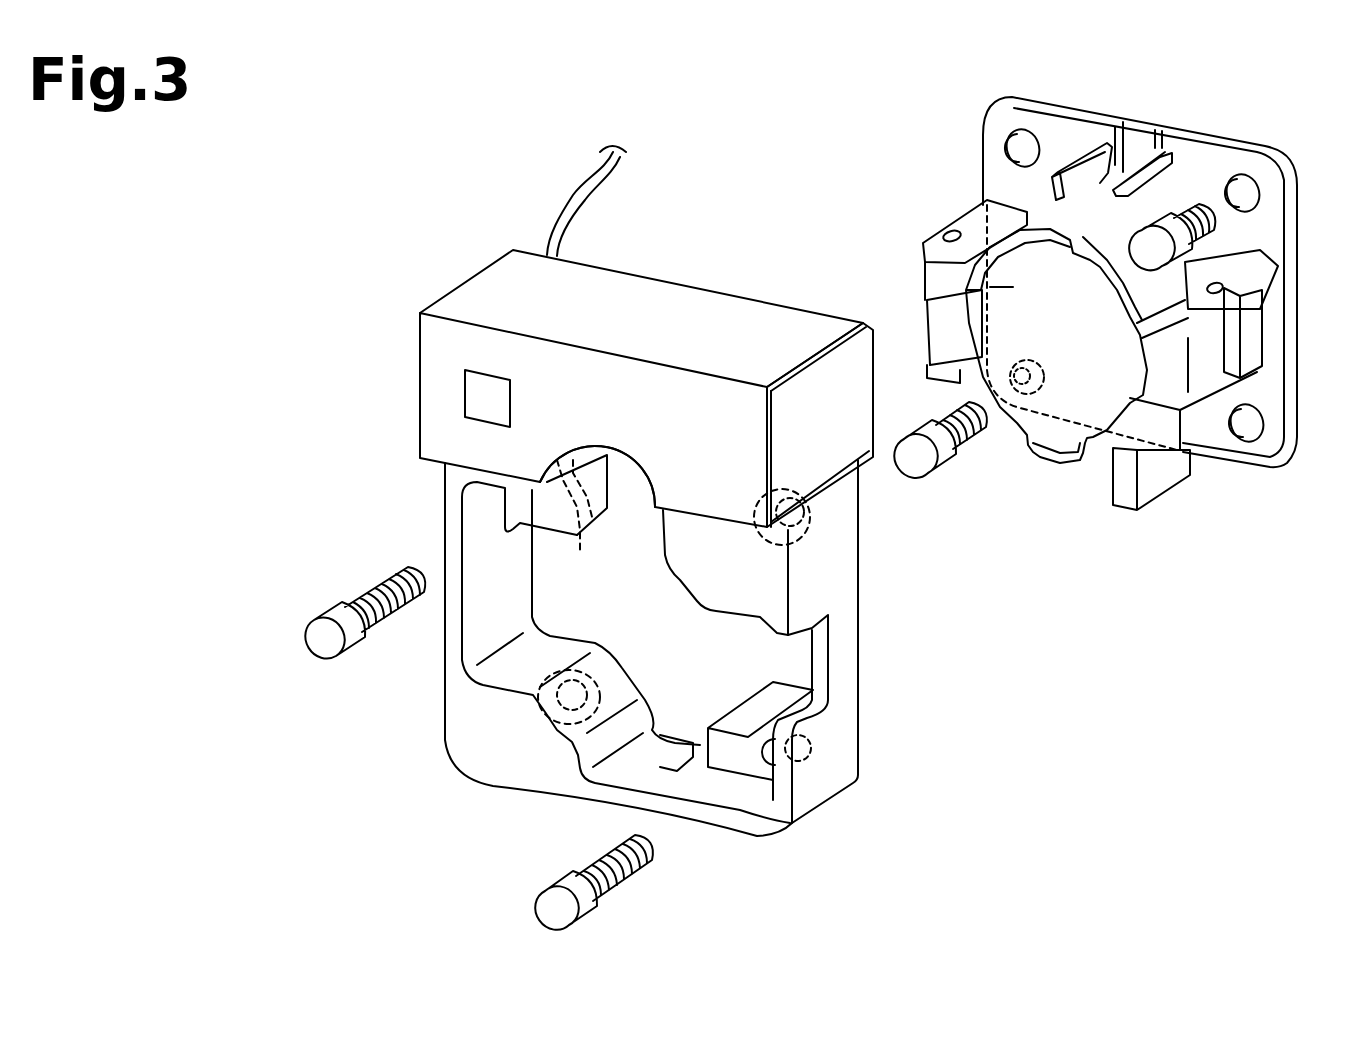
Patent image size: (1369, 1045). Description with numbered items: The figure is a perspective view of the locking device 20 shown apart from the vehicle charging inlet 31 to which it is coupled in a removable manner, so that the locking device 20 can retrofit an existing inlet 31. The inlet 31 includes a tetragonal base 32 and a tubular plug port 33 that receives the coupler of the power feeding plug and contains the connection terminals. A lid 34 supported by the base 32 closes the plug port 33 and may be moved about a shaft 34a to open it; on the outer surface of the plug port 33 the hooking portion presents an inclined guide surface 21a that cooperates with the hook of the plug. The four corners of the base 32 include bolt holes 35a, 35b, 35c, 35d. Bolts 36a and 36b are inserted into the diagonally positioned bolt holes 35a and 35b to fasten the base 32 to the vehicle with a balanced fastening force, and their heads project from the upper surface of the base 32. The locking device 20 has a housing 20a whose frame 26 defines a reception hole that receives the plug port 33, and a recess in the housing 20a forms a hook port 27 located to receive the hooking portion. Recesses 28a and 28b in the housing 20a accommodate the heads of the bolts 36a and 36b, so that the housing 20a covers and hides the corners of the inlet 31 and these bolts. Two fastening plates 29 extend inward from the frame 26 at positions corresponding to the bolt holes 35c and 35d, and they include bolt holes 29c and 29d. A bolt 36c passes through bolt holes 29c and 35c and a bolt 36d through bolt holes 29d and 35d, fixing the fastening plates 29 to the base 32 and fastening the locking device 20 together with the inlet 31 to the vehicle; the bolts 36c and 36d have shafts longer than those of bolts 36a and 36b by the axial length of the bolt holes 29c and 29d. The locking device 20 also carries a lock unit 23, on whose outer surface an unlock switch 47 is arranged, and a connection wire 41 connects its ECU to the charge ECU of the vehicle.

The locking device 20 is at (665, 278).
The housing 20a is at (838, 583).
The guide surface 21a is at (1072, 192).
The lock unit 23 is at (460, 300).
The frame 26 is at (480, 630).
The hook port 27 is at (644, 486).
The recess 28a is at (800, 520).
The recess 28b is at (557, 723).
The fastening plate 29 is at (592, 522).
The bolt hole 29c is at (808, 745).
The bolt hole 29d is at (582, 522).
The inlet 31 is at (1285, 462).
The base 32 is at (1192, 160).
The plug port 33 is at (1073, 473).
The lid 34 is at (990, 287).
The shaft 34a is at (1231, 345).
The bolt hole 35a is at (1243, 178).
The bolt hole 35b is at (1010, 377).
The bolt hole 35c is at (1245, 442).
The bolt hole 35d is at (1020, 130).
The bolt 36a is at (1174, 259).
The bolt 36b is at (938, 472).
The bolt 36c is at (548, 905).
The bolt 36d is at (318, 648).
The connection wire 41 is at (598, 176).
The unlock switch 47 is at (468, 398).